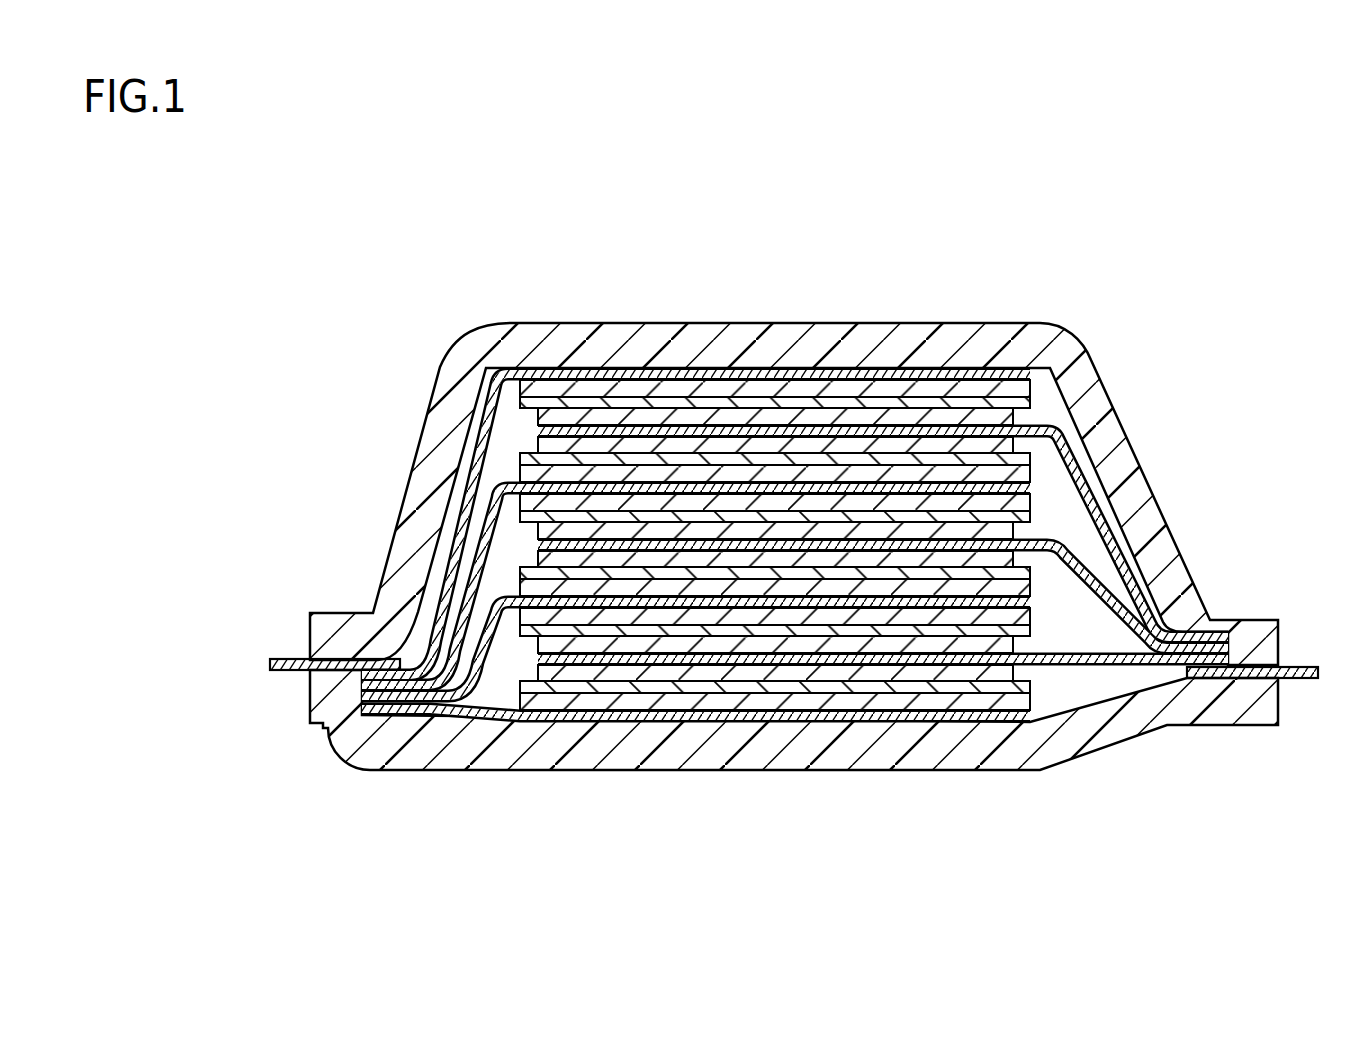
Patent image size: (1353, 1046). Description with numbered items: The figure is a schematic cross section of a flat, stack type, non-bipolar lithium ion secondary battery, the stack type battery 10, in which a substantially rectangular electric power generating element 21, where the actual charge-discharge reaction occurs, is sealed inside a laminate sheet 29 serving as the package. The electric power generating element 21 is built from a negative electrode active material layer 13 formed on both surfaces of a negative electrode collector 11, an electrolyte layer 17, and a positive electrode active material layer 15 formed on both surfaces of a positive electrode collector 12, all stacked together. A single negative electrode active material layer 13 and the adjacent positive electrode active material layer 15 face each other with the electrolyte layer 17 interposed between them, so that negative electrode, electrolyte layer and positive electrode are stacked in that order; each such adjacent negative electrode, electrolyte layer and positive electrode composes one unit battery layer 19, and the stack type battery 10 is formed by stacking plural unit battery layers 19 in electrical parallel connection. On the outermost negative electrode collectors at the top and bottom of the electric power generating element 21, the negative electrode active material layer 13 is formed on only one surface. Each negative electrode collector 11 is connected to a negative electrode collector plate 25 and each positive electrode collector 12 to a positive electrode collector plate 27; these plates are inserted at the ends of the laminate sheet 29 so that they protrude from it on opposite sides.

The stack type battery 10 is at (330, 139).
The negative electrode collector 11 is at (875, 372).
The positive electrode collector 12 is at (883, 459).
The negative electrode active material layer 13 is at (830, 382).
The positive electrode active material layer 15 is at (733, 418).
The electrolyte layer 17 is at (780, 402).
The unit battery layer 19 is at (795, 453).
The electric power generating element 21 is at (1041, 614).
The negative electrode collector plate 25 is at (295, 658).
The positive electrode collector plate 27 is at (1292, 666).
The laminate sheet 29 is at (1256, 619).